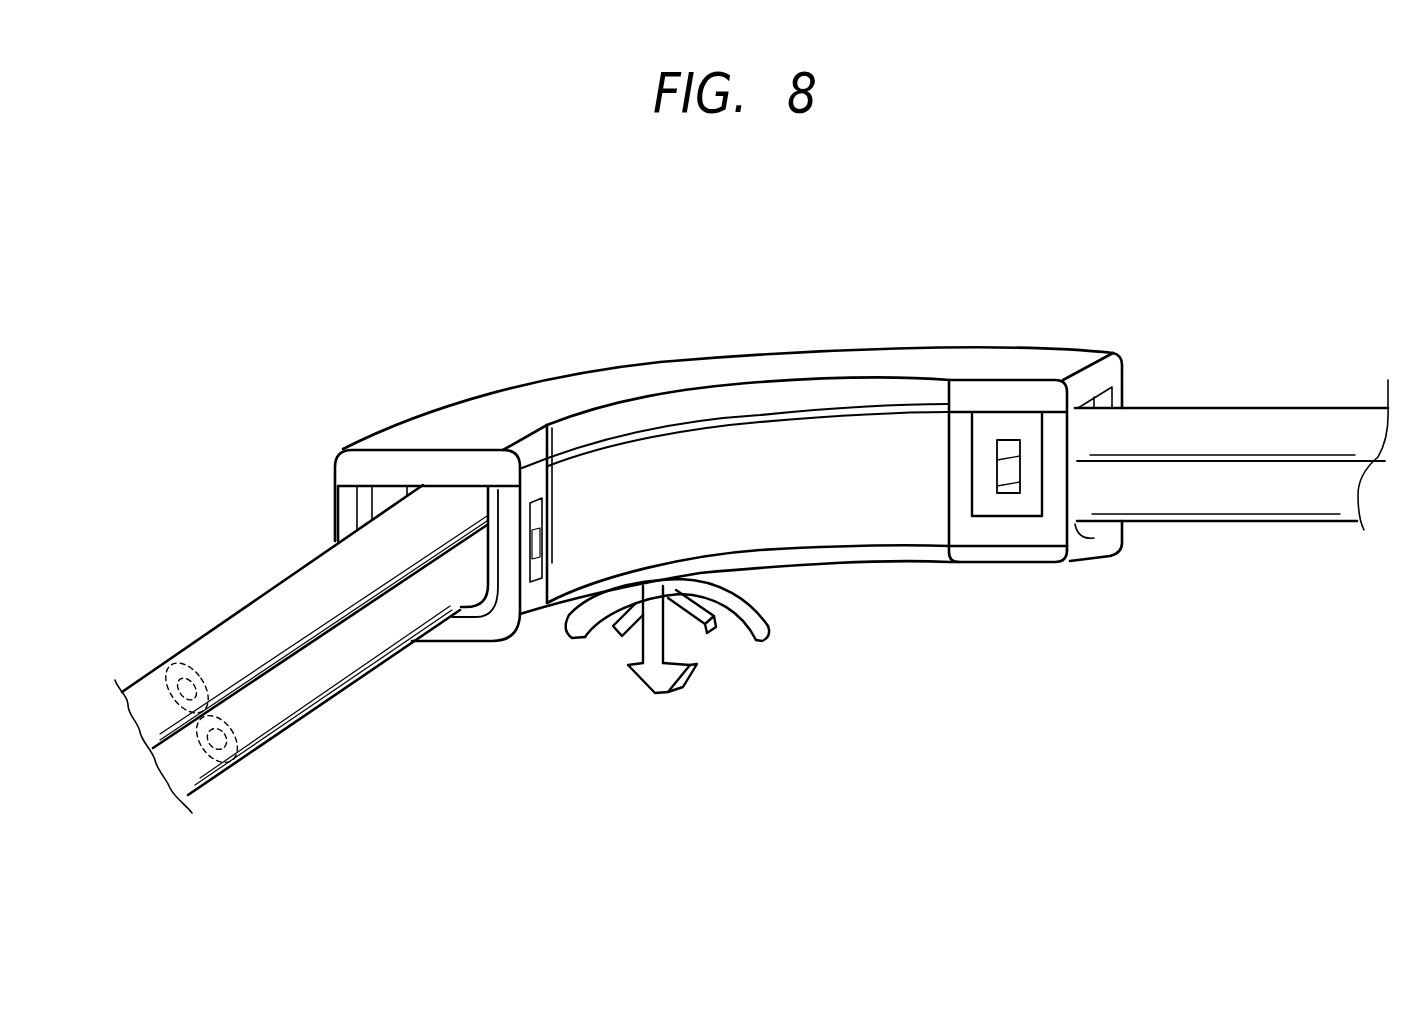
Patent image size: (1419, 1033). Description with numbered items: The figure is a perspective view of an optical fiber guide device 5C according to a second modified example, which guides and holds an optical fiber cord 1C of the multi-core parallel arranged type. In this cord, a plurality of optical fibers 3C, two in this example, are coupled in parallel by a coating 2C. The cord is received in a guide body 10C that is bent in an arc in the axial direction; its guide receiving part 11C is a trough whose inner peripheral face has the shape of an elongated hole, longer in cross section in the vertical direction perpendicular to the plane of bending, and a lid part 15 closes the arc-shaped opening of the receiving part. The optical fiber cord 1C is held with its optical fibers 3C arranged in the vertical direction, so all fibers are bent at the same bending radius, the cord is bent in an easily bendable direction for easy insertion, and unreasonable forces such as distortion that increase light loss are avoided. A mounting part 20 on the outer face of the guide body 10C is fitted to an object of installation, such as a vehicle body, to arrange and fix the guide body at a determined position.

The optical fiber cord 1C is at (1267, 398).
The coating 2C is at (172, 683).
The optical fibers 3C is at (205, 688).
The optical fiber guide device 5C is at (652, 338).
The guide body 10C is at (942, 233).
The guide receiving part 11C is at (822, 440).
The lid part 15 is at (918, 357).
The mounting part 20 is at (652, 694).